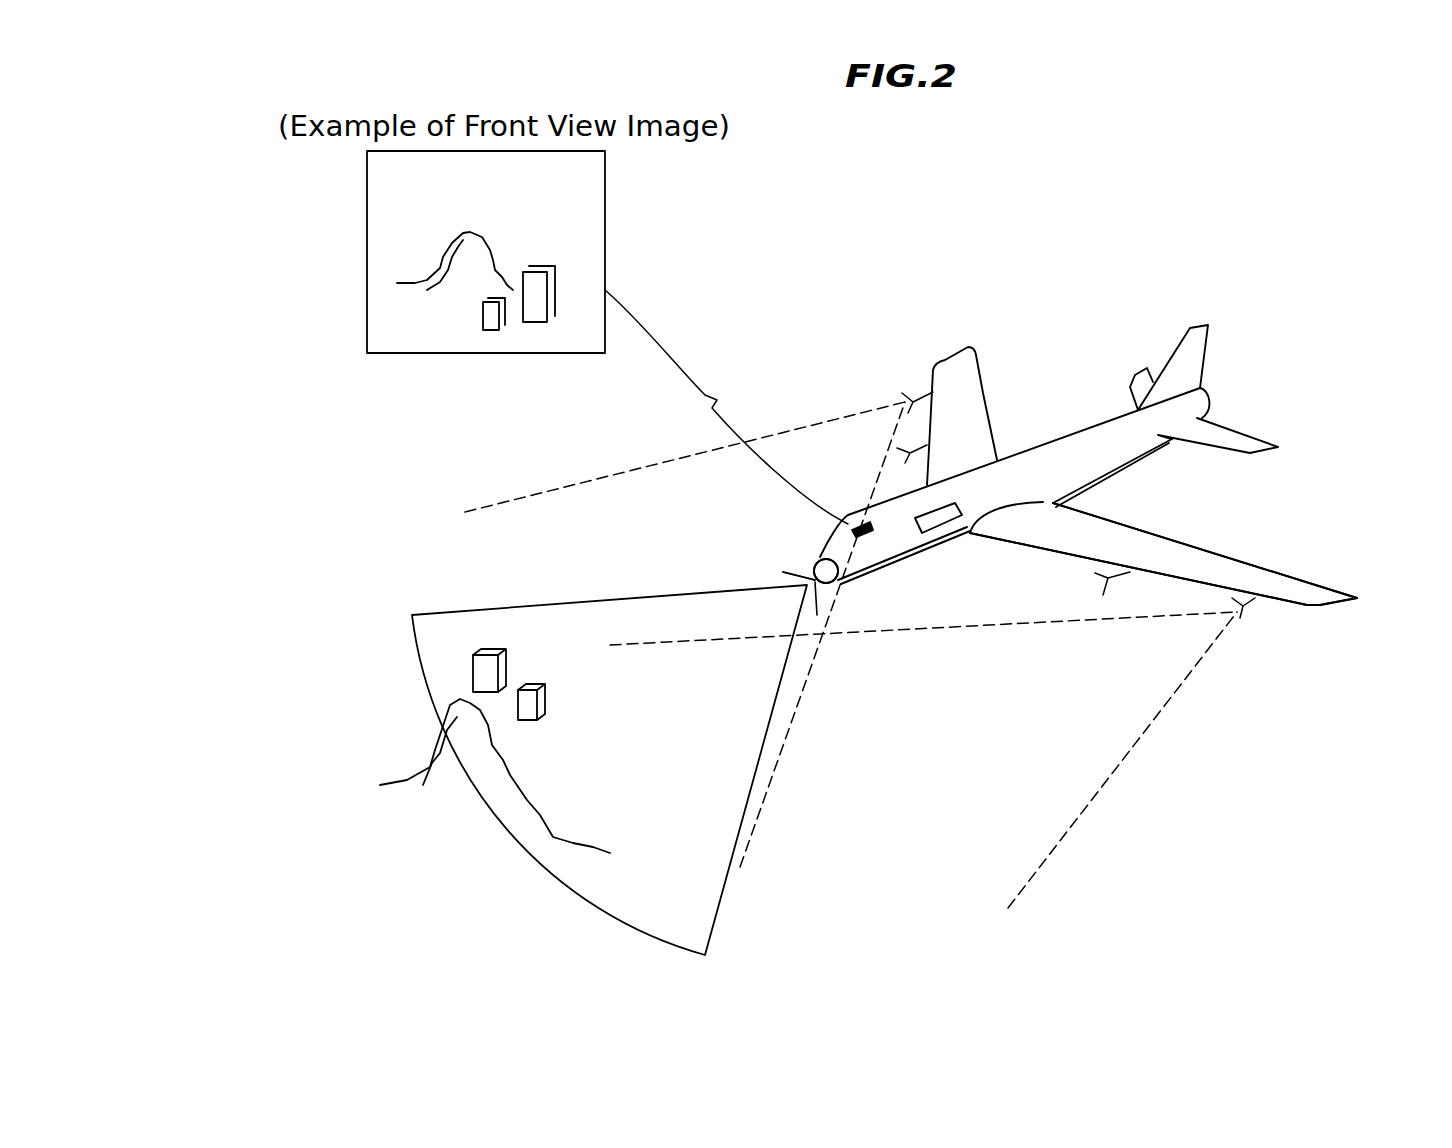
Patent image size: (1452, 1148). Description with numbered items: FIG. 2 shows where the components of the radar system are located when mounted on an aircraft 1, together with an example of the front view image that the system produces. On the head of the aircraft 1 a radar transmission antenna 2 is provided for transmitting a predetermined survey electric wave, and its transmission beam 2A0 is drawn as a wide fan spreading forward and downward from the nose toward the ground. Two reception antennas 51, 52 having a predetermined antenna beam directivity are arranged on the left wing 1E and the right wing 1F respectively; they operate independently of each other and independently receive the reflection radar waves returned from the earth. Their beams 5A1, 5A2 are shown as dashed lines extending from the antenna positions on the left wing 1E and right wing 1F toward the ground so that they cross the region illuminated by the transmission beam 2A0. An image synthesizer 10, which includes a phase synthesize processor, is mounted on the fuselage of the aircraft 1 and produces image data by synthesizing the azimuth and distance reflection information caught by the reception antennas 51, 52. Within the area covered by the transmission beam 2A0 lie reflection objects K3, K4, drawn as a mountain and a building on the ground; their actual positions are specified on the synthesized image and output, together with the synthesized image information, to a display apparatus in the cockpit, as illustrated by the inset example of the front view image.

The aircraft 1 is at (1095, 430).
The right wing 1F is at (975, 412).
The left wing 1E is at (1277, 577).
The radar transmission antenna 2 is at (793, 572).
The transmission beam 2A0 is at (715, 920).
The transmission beam of reception antenna 5A1 is at (1068, 832).
The transmission beam of reception antenna 5A2 is at (807, 425).
The reception antenna 51 is at (1255, 600).
The reception antenna 52 is at (920, 393).
The image synthesizer 10 is at (940, 532).
The reflection object K3 is at (448, 708).
The reflection object K4 is at (483, 648).